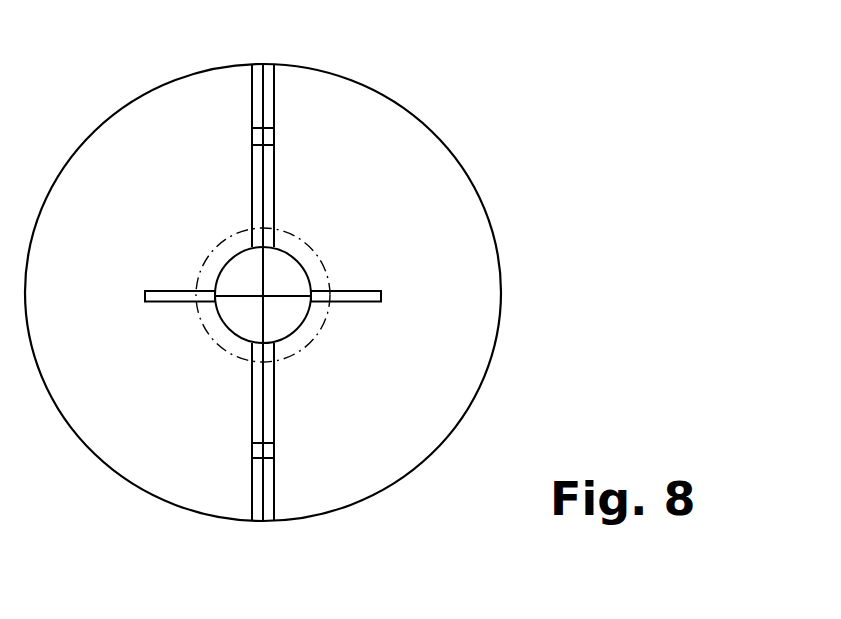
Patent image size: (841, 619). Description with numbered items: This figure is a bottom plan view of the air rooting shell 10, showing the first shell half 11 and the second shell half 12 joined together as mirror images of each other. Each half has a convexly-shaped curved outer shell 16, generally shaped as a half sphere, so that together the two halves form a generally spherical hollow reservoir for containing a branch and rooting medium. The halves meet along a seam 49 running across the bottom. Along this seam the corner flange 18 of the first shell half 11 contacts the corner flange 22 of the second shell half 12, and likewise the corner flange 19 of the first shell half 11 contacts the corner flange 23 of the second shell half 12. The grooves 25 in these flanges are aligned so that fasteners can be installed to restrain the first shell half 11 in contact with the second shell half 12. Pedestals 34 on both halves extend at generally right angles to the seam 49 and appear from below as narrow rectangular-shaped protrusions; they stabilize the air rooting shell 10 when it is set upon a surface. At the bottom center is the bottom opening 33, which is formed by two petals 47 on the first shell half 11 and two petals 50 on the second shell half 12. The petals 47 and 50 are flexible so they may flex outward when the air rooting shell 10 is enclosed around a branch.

The air rooting shell 10 is at (410, 70).
The first shell half 11 is at (155, 172).
The second shell half 12 is at (382, 184).
The curved outer shell 16 is at (93, 289).
The corner flange 18 is at (252, 192).
The corner flange 19 is at (253, 380).
The corner flange 22 is at (274, 200).
The corner flange 23 is at (272, 373).
The grooves 25 is at (252, 136).
The bottom opening 33 is at (280, 257).
The pedestals 34 is at (158, 302).
The petals 47 is at (253, 288).
The seam 49 is at (263, 64).
The petals 50 is at (297, 288).